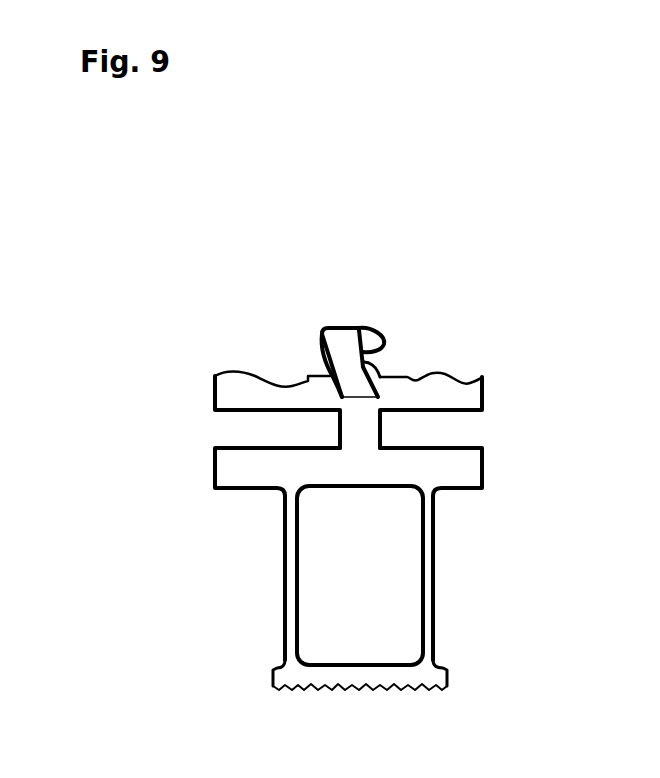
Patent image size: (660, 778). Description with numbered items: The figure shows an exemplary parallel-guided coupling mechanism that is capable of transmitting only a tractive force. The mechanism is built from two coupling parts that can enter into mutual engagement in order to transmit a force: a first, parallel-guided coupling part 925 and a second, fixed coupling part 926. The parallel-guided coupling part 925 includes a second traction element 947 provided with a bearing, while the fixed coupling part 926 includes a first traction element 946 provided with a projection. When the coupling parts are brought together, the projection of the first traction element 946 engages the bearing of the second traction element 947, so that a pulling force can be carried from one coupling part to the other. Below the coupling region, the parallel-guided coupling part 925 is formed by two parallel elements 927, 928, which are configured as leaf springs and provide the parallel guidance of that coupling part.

The parallel-guided coupling part 925 is at (497, 475).
The fixed coupling part 926 is at (499, 387).
The parallel element 927 is at (291, 576).
The parallel element 928 is at (424, 560).
The first traction element 946 is at (378, 368).
The second traction element 947 is at (341, 351).